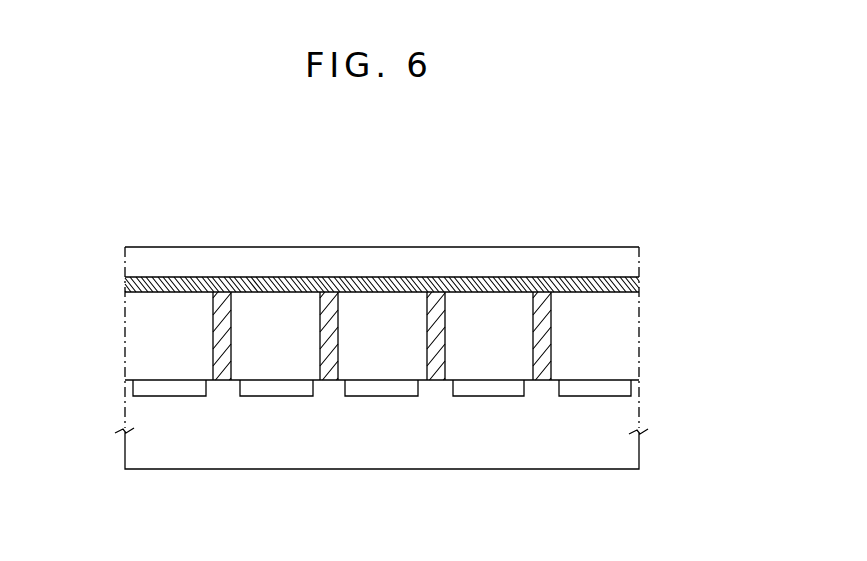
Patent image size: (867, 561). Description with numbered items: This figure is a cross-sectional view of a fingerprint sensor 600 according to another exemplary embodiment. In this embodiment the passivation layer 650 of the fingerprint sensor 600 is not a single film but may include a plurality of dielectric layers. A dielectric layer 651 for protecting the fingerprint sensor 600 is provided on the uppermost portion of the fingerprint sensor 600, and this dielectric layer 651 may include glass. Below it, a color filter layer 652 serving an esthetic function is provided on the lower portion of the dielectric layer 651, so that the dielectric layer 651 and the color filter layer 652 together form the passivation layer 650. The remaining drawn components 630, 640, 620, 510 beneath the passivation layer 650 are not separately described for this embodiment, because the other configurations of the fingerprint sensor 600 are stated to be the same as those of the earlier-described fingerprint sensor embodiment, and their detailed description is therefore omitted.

The fingerprint sensor 600 is at (138, 221).
The passivation layer 650 is at (712, 245).
The dielectric layer 651 is at (632, 254).
The color filter layer 652 is at (632, 285).
The molding / gap layer 630 is at (632, 323).
The partition walls 640 is at (545, 357).
The connection pads 620 is at (507, 389).
The substrate 510 is at (636, 437).